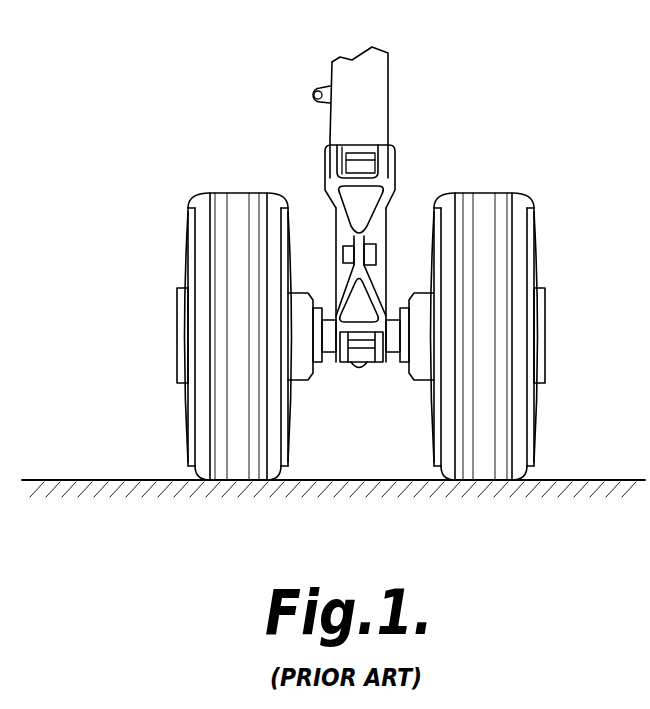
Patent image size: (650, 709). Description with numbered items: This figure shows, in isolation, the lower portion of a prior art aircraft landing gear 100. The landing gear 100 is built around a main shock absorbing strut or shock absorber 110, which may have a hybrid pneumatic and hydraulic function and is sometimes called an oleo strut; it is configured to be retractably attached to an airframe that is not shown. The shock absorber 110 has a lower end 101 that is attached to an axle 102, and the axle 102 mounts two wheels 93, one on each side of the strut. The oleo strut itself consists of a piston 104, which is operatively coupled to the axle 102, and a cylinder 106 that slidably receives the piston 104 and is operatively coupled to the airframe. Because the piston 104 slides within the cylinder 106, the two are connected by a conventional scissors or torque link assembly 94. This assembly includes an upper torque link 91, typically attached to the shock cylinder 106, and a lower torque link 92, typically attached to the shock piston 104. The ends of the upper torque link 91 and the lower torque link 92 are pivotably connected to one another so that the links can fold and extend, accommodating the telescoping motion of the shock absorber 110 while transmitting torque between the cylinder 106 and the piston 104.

The aircraft landing gear 100 is at (307, 255).
The shock absorber 110 is at (392, 104).
The cylinder 106 is at (388, 88).
The upper torque link 91 is at (386, 162).
The torque link assembly 94 is at (345, 159).
The piston 104 is at (382, 296).
The lower torque link 92 is at (366, 270).
The lower end 101 is at (353, 313).
The axle 102 is at (369, 371).
The wheels 93 is at (206, 200).